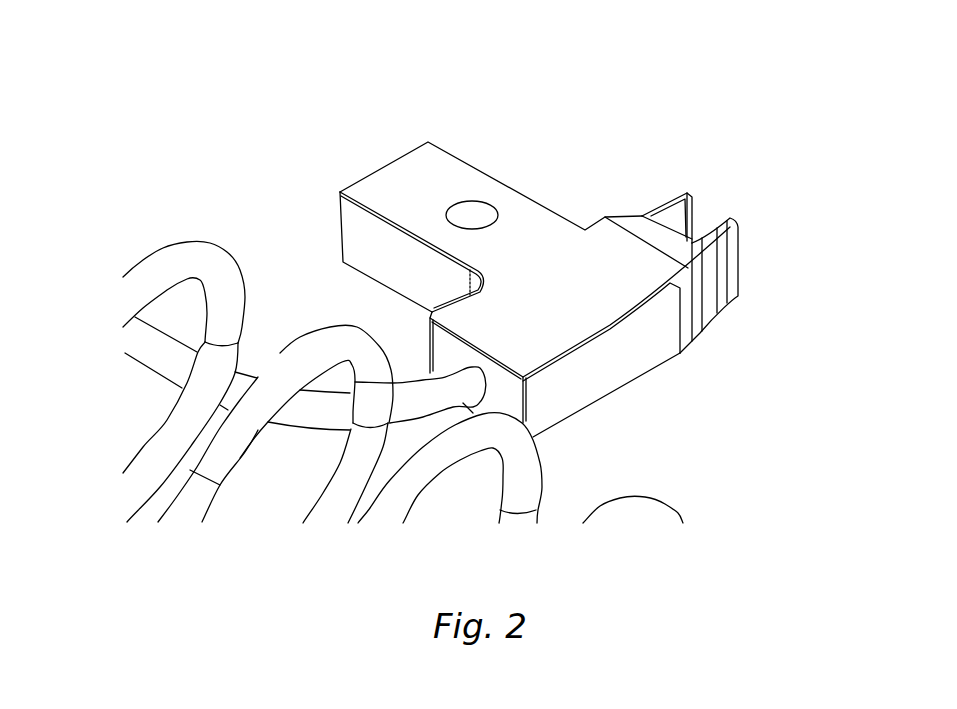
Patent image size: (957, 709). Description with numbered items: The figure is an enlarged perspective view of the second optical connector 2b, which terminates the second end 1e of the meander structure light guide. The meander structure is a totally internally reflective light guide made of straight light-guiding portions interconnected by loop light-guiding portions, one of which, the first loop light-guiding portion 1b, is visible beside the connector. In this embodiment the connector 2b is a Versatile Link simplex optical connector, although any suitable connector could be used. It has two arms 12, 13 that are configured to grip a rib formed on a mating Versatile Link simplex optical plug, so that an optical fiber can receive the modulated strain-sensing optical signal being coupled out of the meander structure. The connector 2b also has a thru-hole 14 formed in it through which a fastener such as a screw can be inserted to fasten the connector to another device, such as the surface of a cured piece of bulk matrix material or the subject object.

The second optical connector 2b is at (657, 99).
The thru-hole 14 is at (487, 200).
The arm 13 is at (674, 200).
The arm 12 is at (731, 218).
The first loop light-guiding portion 1b is at (158, 262).
The second end of the meander structure 1e is at (412, 395).